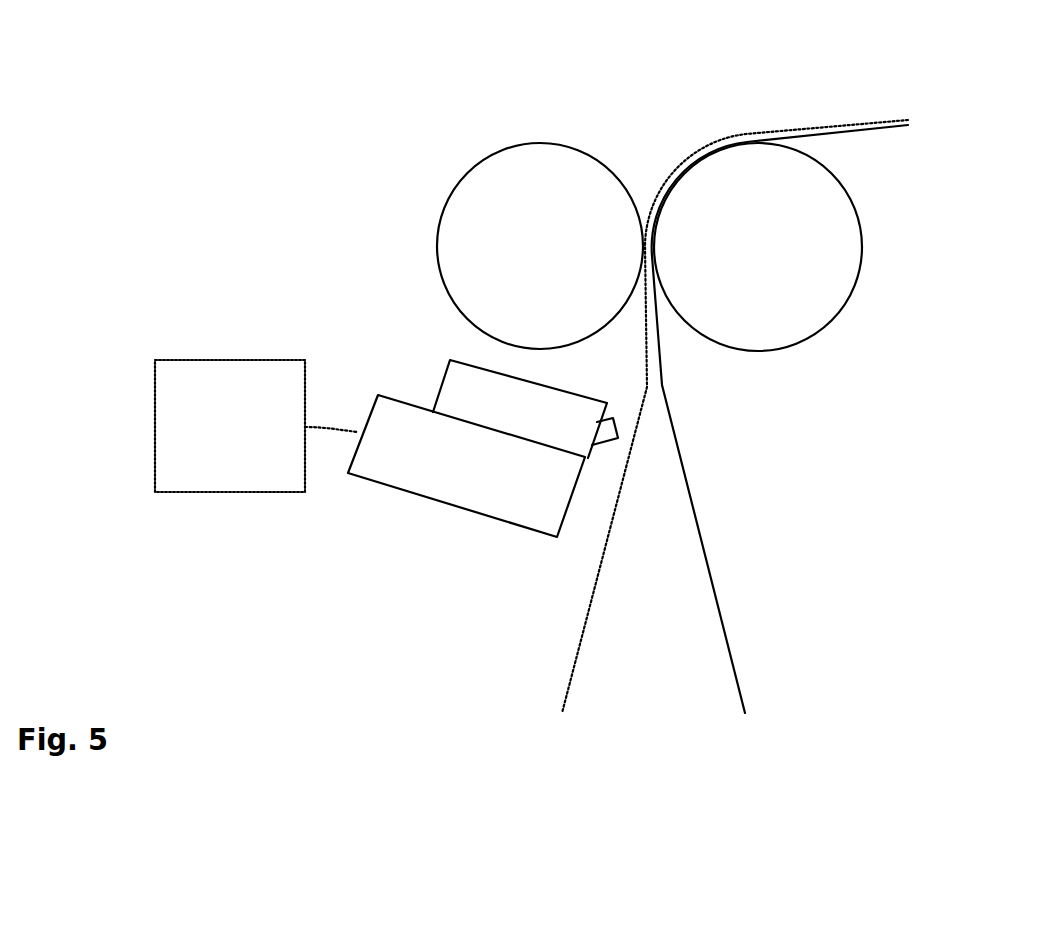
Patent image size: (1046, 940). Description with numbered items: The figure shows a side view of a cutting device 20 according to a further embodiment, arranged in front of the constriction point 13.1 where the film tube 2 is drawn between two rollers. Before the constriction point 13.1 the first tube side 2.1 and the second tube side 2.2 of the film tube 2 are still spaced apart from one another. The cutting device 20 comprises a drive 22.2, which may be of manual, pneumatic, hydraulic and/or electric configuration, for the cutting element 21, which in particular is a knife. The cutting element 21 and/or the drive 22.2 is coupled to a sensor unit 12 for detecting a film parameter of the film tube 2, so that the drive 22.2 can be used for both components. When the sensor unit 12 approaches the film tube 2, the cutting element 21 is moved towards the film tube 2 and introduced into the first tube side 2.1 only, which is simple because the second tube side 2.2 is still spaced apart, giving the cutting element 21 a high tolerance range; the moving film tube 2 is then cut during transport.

The constriction point 13.1 is at (638, 165).
The film tube 2 is at (680, 438).
The first tube side 2.1 is at (589, 612).
The second tube side 2.2 is at (684, 472).
The cutting device 20 is at (455, 448).
The sensor unit 12 is at (463, 490).
The cutting element 21 is at (610, 430).
The drive 22.2 is at (262, 440).